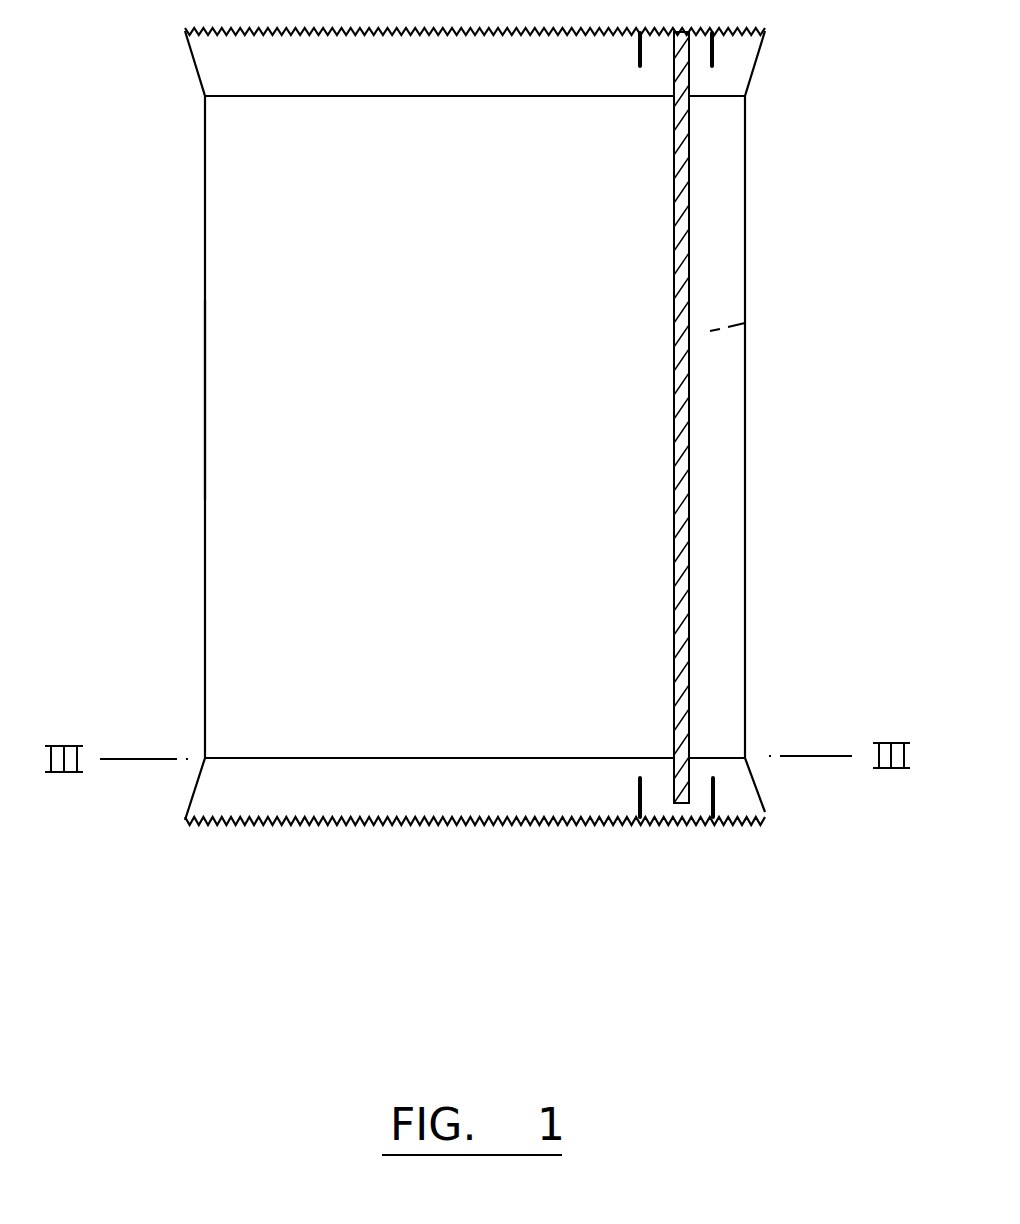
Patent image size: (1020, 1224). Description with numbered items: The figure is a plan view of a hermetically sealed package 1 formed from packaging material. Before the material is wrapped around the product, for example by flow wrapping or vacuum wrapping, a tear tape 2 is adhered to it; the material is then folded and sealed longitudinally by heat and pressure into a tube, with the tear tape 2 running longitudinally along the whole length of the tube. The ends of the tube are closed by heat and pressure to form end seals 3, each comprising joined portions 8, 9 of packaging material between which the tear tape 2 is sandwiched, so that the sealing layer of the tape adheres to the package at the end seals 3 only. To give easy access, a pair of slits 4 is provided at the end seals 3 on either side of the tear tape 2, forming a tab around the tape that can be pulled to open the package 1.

The package 1 is at (196, 275).
The tear tape 2 is at (689, 494).
The end seals 3 is at (250, 96).
The slits 4 is at (640, 820).
The joined portion of packaging material 8 is at (273, 434).
The joined portion of packaging material 9 is at (745, 323).